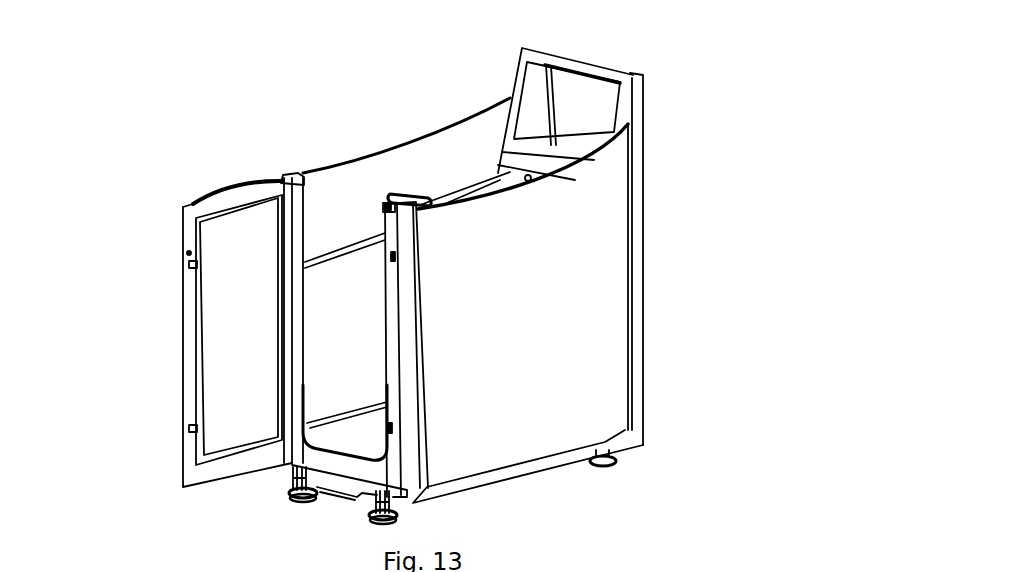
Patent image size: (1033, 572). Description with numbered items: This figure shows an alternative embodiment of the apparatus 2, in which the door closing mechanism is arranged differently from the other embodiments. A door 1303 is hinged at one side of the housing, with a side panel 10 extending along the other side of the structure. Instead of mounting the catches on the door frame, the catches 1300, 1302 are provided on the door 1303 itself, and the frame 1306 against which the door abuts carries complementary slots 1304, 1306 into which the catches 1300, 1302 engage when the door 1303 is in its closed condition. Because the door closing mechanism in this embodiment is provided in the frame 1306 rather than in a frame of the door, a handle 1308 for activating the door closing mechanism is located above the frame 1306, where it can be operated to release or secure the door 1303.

The apparatus 2 is at (660, 57).
The side panel 10 is at (560, 311).
The catch 1300 is at (187, 260).
The catch 1302 is at (188, 428).
The door 1303 is at (217, 327).
The slot 1304 is at (393, 258).
The frame 1306 is at (395, 430).
The handle 1308 is at (397, 192).